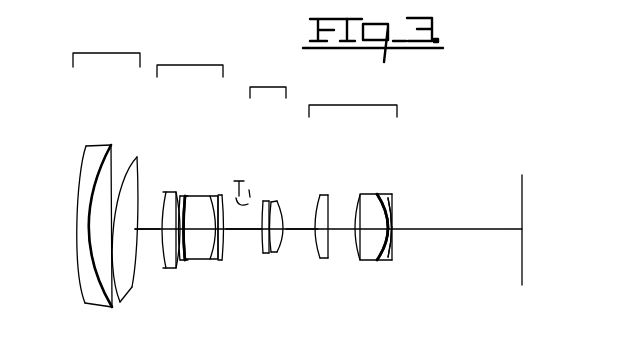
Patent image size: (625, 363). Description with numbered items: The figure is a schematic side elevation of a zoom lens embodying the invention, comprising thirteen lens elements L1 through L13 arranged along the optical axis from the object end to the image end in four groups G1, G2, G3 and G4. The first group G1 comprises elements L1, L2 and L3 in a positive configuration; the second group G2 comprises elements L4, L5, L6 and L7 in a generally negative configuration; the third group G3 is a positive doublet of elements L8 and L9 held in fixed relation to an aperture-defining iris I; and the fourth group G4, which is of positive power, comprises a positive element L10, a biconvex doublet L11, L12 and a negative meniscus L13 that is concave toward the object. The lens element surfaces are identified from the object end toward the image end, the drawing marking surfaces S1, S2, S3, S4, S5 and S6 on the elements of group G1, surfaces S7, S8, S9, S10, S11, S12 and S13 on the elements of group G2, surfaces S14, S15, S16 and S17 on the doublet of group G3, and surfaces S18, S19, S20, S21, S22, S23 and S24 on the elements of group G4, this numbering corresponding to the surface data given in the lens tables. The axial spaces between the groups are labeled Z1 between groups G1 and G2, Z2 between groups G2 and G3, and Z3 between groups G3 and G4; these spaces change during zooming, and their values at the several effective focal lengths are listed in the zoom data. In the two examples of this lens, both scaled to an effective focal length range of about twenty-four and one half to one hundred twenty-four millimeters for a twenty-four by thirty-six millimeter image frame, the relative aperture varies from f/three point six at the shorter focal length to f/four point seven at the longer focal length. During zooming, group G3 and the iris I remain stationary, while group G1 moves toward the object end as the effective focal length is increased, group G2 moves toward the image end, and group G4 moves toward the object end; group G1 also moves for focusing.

The first lens group G1 is at (106, 46).
The second lens group G2 is at (190, 58).
The third lens group G3 is at (268, 79).
The fourth lens group G4 is at (353, 98).
The first lens element L1 is at (69, 222).
The second lens element L2 is at (69, 225).
The third lens element L3 is at (103, 235).
The fourth lens element L4 is at (160, 229).
The fifth lens element L5 is at (176, 233).
The sixth lens element L6 is at (196, 232).
The seventh lens element L7 is at (212, 240).
The eighth lens element L8 is at (243, 252).
The ninth lens element L9 is at (282, 225).
The tenth lens element L10 is at (307, 251).
The eleventh lens element L11 is at (358, 242).
The twelfth lens element L12 is at (385, 236).
The thirteenth lens element L13 is at (430, 235).
The lens element surface S1 is at (80, 250).
The lens element surface S2 is at (93, 270).
The lens element surface S3 is at (100, 294).
The lens element surface S4 is at (110, 292).
The lens element surface S5 is at (122, 305).
The lens element surface S6 is at (133, 284).
The lens element surface S7 is at (165, 260).
The lens element surface S8 is at (177, 266).
The lens element surface S9 is at (181, 262).
The lens element surface S10 is at (186, 258).
The lens element surface S11 is at (212, 258).
The lens element surface S12 is at (217, 262).
The lens element surface S13 is at (224, 258).
The lens element surface S14 is at (262, 254).
The lens element surface S15 is at (268, 254).
The lens element surface S16 is at (274, 253).
The lens element surface S17 is at (284, 252).
The lens element surface S18 is at (315, 258).
The lens element surface S19 is at (328, 259).
The lens element surface S20 is at (358, 260).
The lens element surface S21 is at (368, 260).
The lens element surface S22 is at (379, 260).
The lens element surface S23 is at (390, 258).
The lens element surface S24 is at (393, 247).
The axial space Z1 is at (147, 215).
The axial space Z2 is at (244, 217).
The axial space Z3 is at (302, 218).
The iris I is at (242, 193).